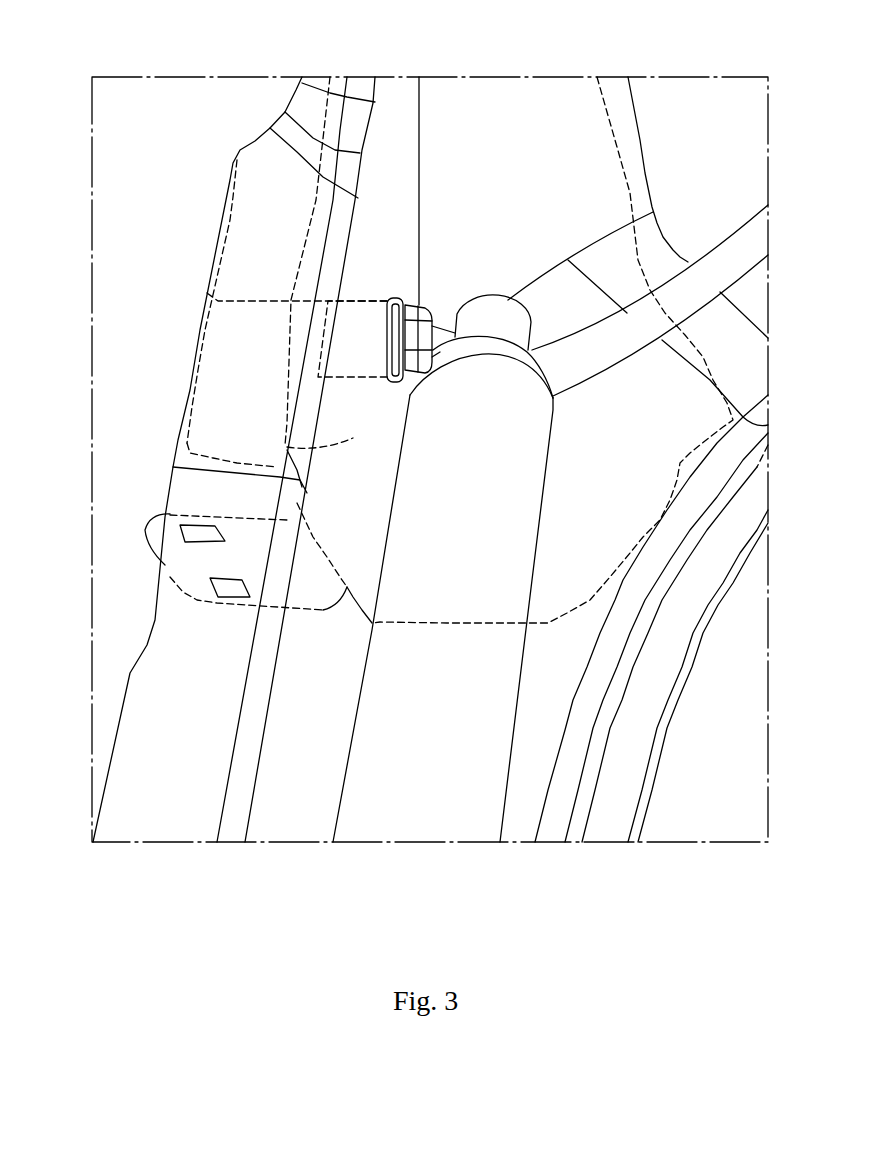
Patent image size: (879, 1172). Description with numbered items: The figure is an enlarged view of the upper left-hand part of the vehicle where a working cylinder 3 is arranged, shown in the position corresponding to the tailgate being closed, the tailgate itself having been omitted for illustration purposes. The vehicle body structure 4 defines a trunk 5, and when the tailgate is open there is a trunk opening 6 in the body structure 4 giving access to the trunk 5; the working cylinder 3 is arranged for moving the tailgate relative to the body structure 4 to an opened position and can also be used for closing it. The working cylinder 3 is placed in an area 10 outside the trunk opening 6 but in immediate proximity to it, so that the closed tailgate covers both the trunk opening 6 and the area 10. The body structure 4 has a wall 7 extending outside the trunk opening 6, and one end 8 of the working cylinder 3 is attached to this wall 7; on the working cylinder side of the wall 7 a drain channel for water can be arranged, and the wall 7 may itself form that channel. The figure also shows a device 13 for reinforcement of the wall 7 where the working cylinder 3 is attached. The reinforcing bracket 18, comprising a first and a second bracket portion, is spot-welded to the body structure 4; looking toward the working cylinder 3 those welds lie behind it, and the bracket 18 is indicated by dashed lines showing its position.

The working cylinder 3 is at (438, 758).
The vehicle body structure 4 is at (652, 413).
The trunk 5 is at (723, 702).
The trunk opening 6 is at (725, 763).
The wall 7 is at (203, 467).
The one end 8 is at (478, 266).
The area 10 is at (550, 690).
The device 13 is at (380, 272).
The bracket 18 is at (207, 293).